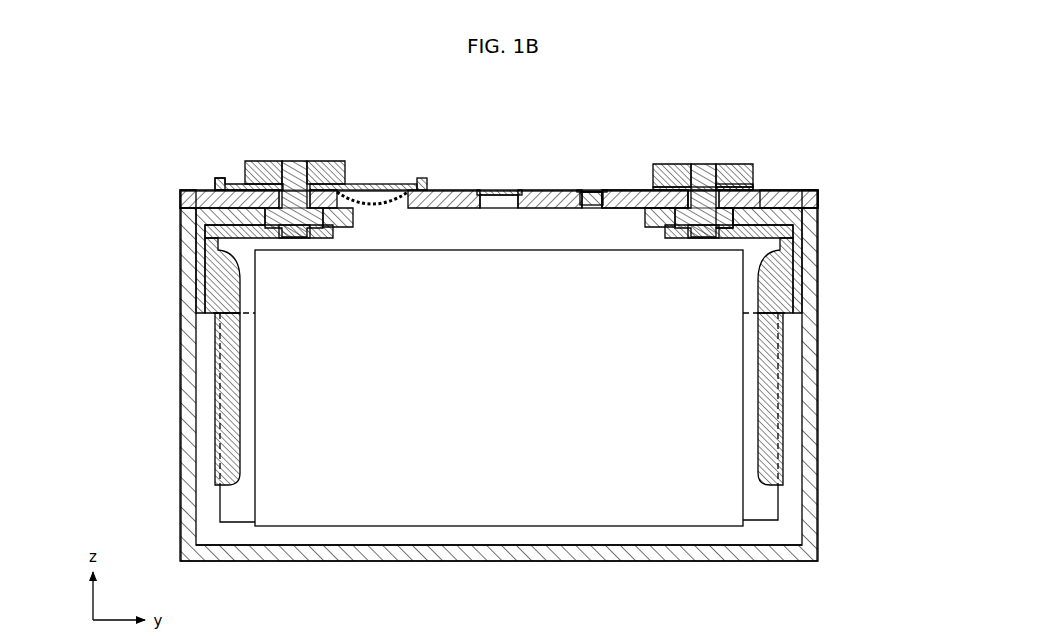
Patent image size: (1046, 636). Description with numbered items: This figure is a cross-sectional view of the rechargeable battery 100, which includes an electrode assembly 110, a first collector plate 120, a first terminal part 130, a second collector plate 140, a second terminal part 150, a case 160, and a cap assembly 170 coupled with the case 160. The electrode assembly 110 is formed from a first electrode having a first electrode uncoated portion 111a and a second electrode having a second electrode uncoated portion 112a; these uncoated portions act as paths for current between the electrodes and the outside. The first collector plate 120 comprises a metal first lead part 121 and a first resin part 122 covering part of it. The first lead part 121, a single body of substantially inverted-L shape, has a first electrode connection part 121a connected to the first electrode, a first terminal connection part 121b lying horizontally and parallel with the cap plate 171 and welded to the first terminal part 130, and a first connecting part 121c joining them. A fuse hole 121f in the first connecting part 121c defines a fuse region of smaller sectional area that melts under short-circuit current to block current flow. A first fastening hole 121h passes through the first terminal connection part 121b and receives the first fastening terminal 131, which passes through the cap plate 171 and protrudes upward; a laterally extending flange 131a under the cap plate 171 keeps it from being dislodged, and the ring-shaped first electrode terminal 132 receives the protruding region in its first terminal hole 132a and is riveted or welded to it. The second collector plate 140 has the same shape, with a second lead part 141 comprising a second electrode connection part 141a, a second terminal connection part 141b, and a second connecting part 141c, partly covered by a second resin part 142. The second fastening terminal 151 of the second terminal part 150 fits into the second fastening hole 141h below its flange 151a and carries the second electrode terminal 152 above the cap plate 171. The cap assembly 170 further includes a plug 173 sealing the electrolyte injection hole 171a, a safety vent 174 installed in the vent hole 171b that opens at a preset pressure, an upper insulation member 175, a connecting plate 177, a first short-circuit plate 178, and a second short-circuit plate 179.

The rechargeable battery 100 is at (872, 118).
The electrode assembly 110 is at (489, 497).
The first electrode uncoated portion 111a is at (237, 524).
The second electrode uncoated portion 112a is at (770, 522).
The first collector plate 120 is at (789, 403).
The first lead part 121 is at (799, 355).
The first electrode connection part 121a is at (820, 399).
The first terminal connection part 121b is at (772, 245).
The first connecting part 121c is at (780, 268).
The fuse hole 121f is at (768, 192).
The first fastening hole 121h is at (700, 240).
The first resin part 122 is at (800, 216).
The first terminal part 130 is at (732, 192).
The first fastening terminal 131 is at (703, 165).
The flange 131a is at (752, 205).
The first electrode terminal 132 is at (666, 165).
The first terminal hole 132a is at (680, 165).
The second collector plate 140 is at (201, 355).
The second lead part 141 is at (201, 355).
The second electrode connection part 141a is at (179, 399).
The second terminal connection part 141b is at (226, 247).
The second connecting part 141c is at (218, 268).
The second fastening hole 141h is at (303, 240).
The second resin part 142 is at (203, 240).
The second terminal part 150 is at (243, 197).
The second fastening terminal 151 is at (295, 162).
The flange 151a is at (218, 200).
The second electrode terminal 152 is at (330, 162).
The case 160 is at (603, 549).
The cap assembly 170 is at (496, 177).
The cap plate 171 is at (548, 190).
The electrolyte injection hole 171a is at (592, 208).
The vent hole 171b is at (493, 208).
The plug 173 is at (590, 190).
The safety vent 174 is at (495, 190).
The upper insulation member 175 is at (424, 178).
The connecting plate 177 is at (626, 190).
The first short-circuit plate 178 is at (372, 198).
The second short-circuit plate 179 is at (392, 183).